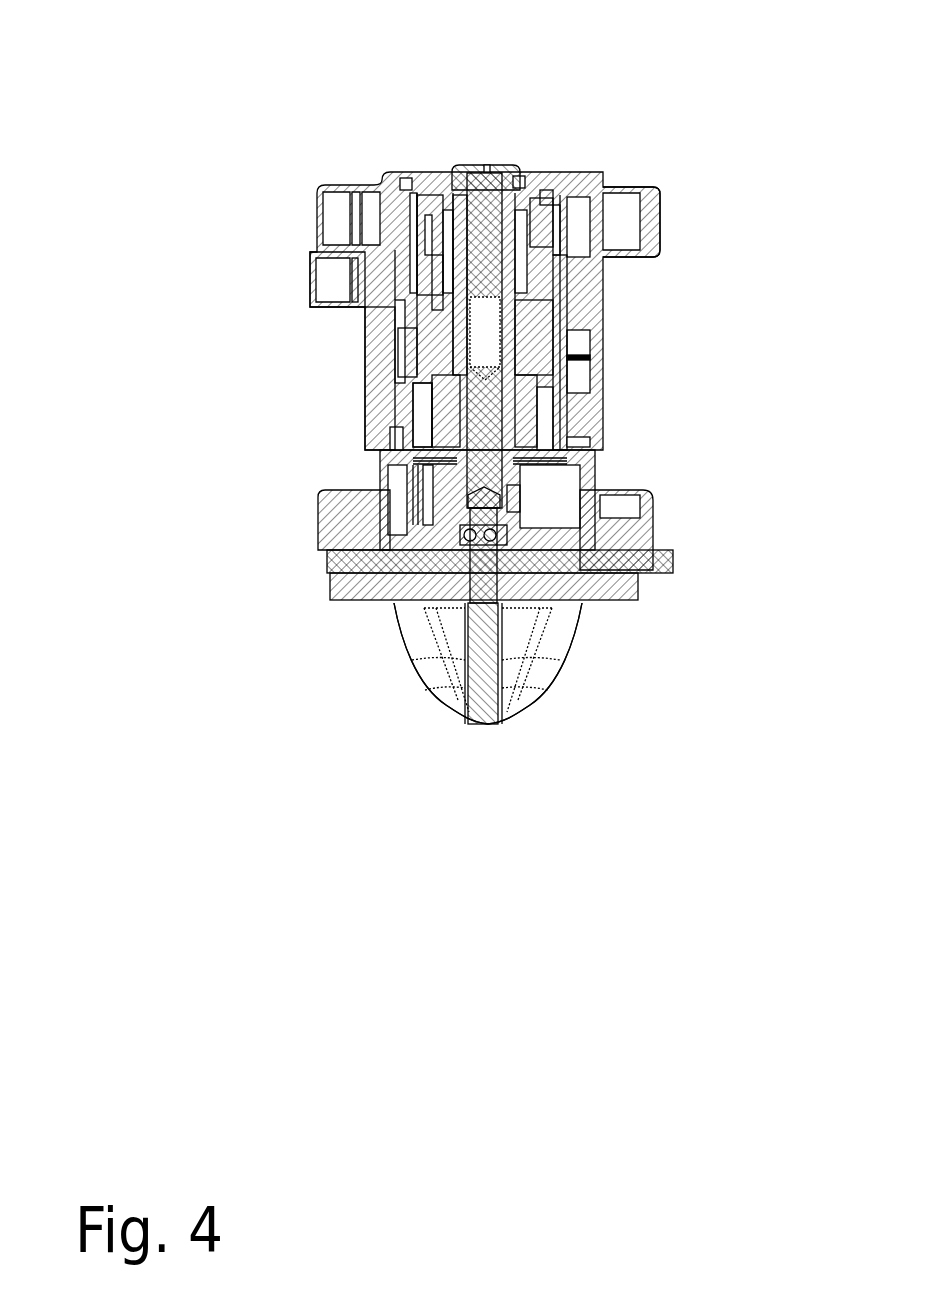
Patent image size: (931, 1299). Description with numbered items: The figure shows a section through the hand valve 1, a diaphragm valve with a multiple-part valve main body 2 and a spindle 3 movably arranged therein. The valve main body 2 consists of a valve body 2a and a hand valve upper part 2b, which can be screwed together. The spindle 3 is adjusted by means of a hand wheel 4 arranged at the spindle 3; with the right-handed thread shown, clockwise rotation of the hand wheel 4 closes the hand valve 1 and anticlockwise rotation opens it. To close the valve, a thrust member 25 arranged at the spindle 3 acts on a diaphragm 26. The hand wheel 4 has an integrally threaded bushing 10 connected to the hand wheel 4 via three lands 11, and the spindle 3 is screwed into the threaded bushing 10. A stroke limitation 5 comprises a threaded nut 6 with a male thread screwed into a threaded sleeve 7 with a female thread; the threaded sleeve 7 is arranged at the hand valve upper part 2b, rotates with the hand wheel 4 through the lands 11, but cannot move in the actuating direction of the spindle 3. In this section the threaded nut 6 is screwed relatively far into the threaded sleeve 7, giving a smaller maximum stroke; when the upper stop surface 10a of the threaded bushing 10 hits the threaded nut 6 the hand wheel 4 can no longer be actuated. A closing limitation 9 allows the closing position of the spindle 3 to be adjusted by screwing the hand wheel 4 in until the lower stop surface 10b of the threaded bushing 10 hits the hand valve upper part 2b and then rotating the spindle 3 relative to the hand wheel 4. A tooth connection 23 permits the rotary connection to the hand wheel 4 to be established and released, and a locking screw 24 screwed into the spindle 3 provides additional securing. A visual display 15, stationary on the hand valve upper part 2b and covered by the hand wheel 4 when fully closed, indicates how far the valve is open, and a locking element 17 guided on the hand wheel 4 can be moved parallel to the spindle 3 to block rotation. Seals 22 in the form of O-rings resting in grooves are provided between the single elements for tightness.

The hand valve 1 is at (272, 72).
The valve main body 2 is at (400, 638).
The valve body 2a is at (553, 645).
The hand valve upper part 2b is at (363, 521).
The spindle 3 is at (511, 428).
The hand wheel 4 is at (657, 210).
The stroke limitation 5 is at (409, 229).
The threaded nut 6 is at (540, 247).
The threaded sleeve 7 is at (555, 298).
The closing limitation 9 is at (437, 367).
The threaded bushing 10 is at (527, 342).
The upper stop surface 10a is at (447, 360).
The lower stop surface 10b is at (437, 300).
The lands 11 is at (407, 253).
The visual display 15 is at (397, 400).
The locking element 17 is at (365, 305).
The seals 22 is at (403, 185).
The tooth connection 23 is at (560, 188).
The locking screw 24 is at (492, 170).
The thrust member 25 is at (523, 523).
The diaphragm 26 is at (585, 568).